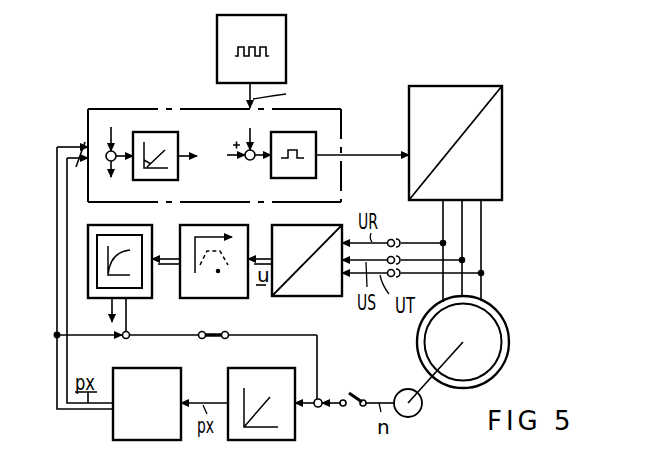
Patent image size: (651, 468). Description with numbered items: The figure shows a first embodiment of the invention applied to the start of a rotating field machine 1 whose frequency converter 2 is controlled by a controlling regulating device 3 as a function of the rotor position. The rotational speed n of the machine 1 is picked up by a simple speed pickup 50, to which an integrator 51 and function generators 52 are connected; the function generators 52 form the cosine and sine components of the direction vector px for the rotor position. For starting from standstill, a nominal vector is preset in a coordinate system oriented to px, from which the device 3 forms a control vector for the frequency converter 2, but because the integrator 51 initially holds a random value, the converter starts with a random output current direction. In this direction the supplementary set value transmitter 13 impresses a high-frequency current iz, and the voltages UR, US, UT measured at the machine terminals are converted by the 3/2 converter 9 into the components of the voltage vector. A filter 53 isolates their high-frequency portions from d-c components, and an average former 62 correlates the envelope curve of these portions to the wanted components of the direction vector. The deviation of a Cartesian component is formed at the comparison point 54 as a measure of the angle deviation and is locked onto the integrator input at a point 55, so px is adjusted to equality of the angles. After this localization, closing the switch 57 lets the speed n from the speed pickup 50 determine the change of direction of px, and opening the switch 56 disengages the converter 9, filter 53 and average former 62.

The rotating field machine 1 is at (504, 299).
The frequency converter 2 is at (502, 141).
The controlling regulating device 3 is at (328, 108).
The 3/2 converter 9 is at (320, 296).
The supplementary set value transmitter 13 is at (286, 50).
The speed pickup 50 is at (420, 411).
The integrator 51 is at (288, 381).
The function generators 52 is at (181, 372).
The filter 53 is at (240, 298).
The comparison point 54 is at (129, 338).
The point 55 is at (318, 407).
The switch 56 is at (222, 338).
The switch 57 is at (358, 397).
The average former 62 is at (150, 298).